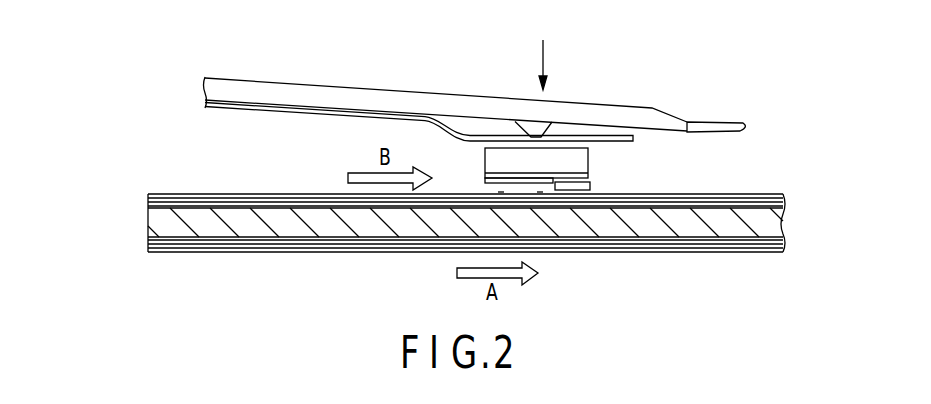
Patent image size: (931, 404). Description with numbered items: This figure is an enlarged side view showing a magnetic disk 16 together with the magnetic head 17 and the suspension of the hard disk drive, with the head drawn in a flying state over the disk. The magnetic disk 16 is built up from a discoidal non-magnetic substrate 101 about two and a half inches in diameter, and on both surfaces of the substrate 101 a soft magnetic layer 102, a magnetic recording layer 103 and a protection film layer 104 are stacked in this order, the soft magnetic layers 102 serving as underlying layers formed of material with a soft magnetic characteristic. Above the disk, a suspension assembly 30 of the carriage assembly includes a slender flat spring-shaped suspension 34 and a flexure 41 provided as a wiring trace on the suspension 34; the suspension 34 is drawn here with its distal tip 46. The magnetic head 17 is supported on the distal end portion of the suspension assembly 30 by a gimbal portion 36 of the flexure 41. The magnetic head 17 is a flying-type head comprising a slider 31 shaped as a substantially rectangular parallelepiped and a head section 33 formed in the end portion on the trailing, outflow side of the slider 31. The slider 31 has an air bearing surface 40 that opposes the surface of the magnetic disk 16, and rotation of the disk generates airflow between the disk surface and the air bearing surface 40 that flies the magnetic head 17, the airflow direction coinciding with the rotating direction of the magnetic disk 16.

The magnetic disk 16 is at (185, 165).
The magnetic head 17 is at (543, 198).
The suspension assembly 30 is at (396, 76).
The slider 31 is at (553, 165).
The head section 33 is at (588, 166).
The suspension 34 is at (293, 95).
The gimbal portion 36 is at (484, 120).
The air bearing surface 40 is at (498, 197).
The flexure 41 is at (278, 110).
The arm tip 46 is at (718, 121).
The non-magnetic substrate 101 is at (257, 232).
The soft magnetic layer 102 is at (150, 207).
The magnetic recording layer 103 is at (224, 200).
The protection film layer 104 is at (158, 194).